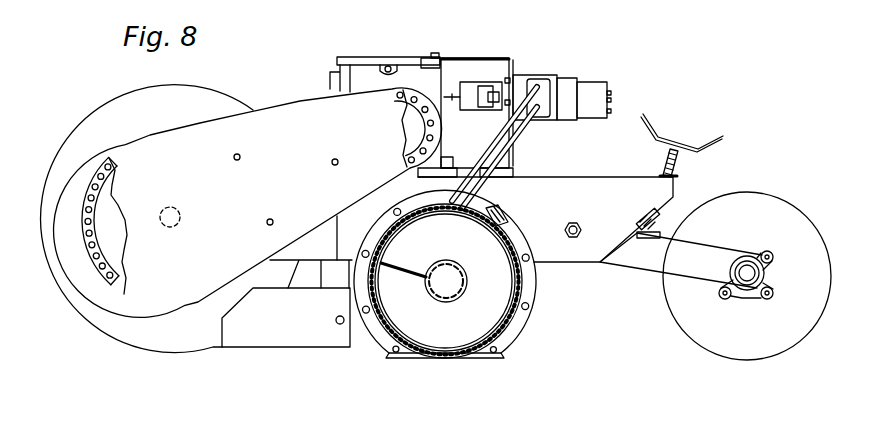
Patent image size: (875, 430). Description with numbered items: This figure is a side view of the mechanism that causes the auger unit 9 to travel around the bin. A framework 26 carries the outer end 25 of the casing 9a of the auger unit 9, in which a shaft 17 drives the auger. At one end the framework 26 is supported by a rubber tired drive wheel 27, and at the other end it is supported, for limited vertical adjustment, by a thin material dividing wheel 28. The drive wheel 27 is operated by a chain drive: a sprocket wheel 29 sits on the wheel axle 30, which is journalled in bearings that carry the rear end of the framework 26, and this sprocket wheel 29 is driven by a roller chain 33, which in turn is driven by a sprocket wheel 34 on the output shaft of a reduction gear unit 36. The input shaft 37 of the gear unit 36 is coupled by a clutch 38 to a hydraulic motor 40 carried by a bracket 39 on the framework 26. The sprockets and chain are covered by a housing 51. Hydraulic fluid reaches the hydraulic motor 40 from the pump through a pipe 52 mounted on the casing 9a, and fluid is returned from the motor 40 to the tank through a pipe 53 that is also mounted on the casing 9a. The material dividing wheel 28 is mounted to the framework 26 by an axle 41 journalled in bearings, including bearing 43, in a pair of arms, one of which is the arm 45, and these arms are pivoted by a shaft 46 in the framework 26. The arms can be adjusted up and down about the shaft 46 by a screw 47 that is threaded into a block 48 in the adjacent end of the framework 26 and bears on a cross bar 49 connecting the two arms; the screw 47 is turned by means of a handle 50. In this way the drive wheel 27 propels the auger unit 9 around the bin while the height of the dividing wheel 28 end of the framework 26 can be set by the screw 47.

The auger unit 9 is at (373, 354).
The casing 9a is at (407, 355).
The shaft 17 is at (442, 299).
The outer end 25 is at (527, 317).
The framework 26 is at (578, 203).
The drive wheel 27 is at (73, 130).
The material dividing wheel 28 is at (747, 276).
The sprocket wheel 29 is at (100, 194).
The wheel axle 30 is at (171, 205).
The roller chain 33 is at (89, 231).
The sprocket wheel 34 is at (410, 123).
The reduction gear unit 36 is at (350, 74).
The input shaft 37 is at (447, 93).
The clutch 38 is at (470, 110).
The bracket 39 is at (463, 57).
The hydraulic motor 40 is at (537, 75).
The axle 41 is at (740, 276).
The bearing 43 is at (749, 258).
The arm 45 is at (643, 265).
The shaft 46 is at (565, 230).
The screw 47 is at (678, 163).
The block 48 is at (661, 175).
The cross bar 49 is at (657, 232).
The handle 50 is at (664, 136).
The housing 51 is at (194, 272).
The pipe 52 is at (453, 198).
The pipe 53 is at (483, 205).